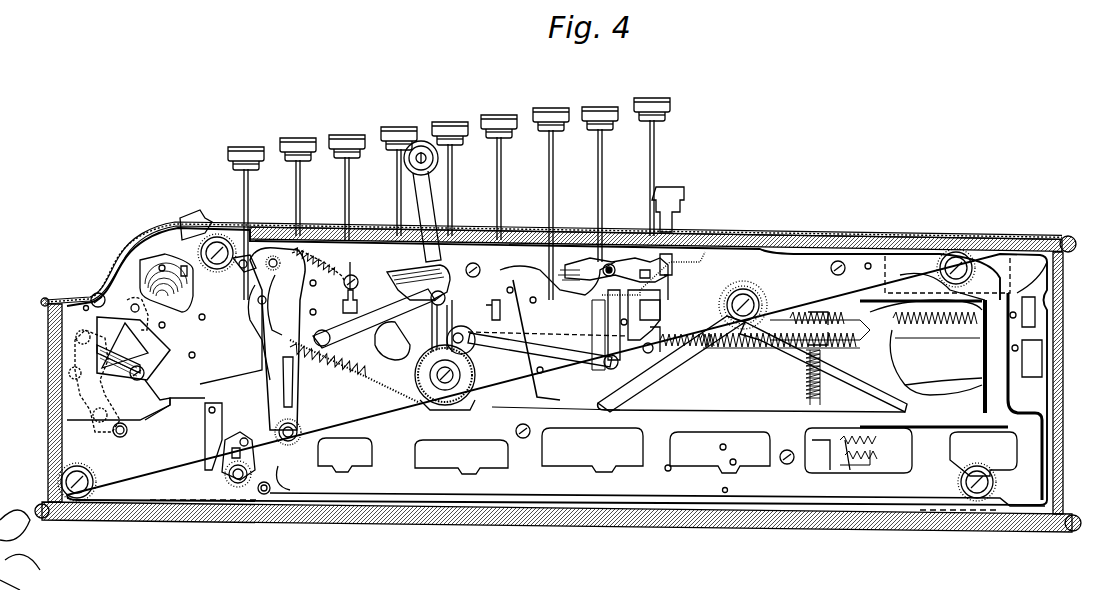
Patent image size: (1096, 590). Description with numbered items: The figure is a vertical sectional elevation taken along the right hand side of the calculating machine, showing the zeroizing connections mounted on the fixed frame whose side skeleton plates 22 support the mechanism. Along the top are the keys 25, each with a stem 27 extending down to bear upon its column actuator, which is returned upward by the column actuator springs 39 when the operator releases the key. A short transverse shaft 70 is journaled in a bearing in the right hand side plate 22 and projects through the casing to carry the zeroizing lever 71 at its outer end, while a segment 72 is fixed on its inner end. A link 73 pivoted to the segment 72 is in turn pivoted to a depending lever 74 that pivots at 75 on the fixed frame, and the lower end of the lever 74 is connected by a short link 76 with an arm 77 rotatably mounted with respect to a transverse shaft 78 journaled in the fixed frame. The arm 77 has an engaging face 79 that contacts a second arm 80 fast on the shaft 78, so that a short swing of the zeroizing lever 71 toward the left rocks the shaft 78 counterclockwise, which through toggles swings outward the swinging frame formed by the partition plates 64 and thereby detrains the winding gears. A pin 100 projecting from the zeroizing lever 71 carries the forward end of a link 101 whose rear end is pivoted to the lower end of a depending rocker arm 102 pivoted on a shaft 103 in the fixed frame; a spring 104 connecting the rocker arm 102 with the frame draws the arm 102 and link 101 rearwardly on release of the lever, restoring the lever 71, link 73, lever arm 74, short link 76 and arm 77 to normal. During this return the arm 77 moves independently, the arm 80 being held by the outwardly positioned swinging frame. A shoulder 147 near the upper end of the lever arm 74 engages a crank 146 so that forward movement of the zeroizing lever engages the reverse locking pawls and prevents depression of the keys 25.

The side skeleton plates 22 is at (550, 482).
The keys 25 is at (600, 108).
The stem 27 is at (653, 157).
The column actuator springs 39 is at (840, 318).
The partition plates 64 is at (105, 342).
The short transverse shaft 70 is at (445, 392).
The zeroizing lever 71 is at (421, 142).
The segment 72 is at (392, 268).
The link 73 is at (352, 322).
The depending lever 74 is at (282, 348).
The pivot 75 is at (273, 260).
The short link 76 is at (274, 438).
The arm 77 is at (260, 494).
The transverse shaft 78 is at (242, 484).
The engaging face 79 is at (225, 447).
The second arm 80 is at (228, 458).
The pin 100 is at (458, 330).
The link 101 is at (553, 350).
The depending rocker arm 102 is at (628, 324).
The shaft 103 is at (611, 262).
The spring 104 is at (745, 345).
The crank 146 is at (230, 270).
The shoulder 147 is at (200, 258).